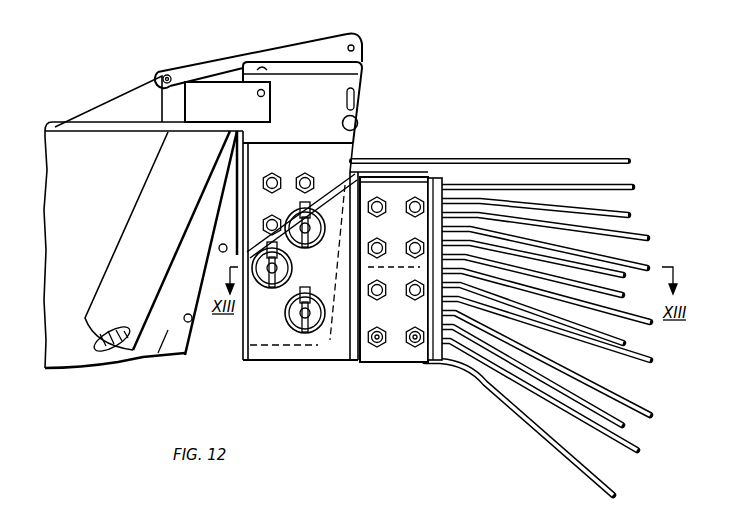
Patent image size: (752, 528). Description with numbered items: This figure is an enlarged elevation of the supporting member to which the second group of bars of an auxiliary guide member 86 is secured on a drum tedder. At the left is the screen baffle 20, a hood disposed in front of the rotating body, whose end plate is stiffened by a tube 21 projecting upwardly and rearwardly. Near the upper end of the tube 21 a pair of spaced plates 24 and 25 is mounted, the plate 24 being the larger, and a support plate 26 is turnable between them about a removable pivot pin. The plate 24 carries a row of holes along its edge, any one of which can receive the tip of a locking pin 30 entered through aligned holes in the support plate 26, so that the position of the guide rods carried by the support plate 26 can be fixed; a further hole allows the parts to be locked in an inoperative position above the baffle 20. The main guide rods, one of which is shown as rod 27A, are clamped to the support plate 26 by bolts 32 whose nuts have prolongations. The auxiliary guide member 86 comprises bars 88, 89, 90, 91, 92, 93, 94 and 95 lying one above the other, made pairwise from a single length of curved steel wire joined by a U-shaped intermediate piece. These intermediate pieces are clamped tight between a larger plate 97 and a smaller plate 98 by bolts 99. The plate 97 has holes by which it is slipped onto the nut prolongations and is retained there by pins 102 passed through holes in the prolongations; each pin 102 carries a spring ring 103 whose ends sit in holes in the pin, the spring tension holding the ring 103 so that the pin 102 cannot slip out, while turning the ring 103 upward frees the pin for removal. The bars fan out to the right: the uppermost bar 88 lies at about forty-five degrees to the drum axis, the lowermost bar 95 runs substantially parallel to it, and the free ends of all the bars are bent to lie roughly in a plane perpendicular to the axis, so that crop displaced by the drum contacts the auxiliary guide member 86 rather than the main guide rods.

The screen baffle 20 is at (135, 367).
The tube 21 is at (137, 218).
The plate 24 is at (313, 37).
The plate 25 is at (192, 98).
The support plate 26 is at (359, 82).
The upper conduit tube 27A is at (536, 141).
The locking pin 30 is at (359, 121).
The bolt 32 is at (302, 174).
The auxiliary guide member 86 is at (510, 406).
The bar 88 is at (636, 191).
The bar 89 is at (642, 239).
The bar 90 is at (645, 264).
The bar 91 is at (648, 328).
The bar 92 is at (650, 365).
The bar 93 is at (653, 415).
The bar 94 is at (640, 450).
The bar 95 is at (612, 491).
The plate 97 is at (312, 362).
The plate 98 is at (380, 347).
The bolt 99 is at (412, 347).
The pin 102 is at (272, 292).
The spring ring 103 is at (292, 260).